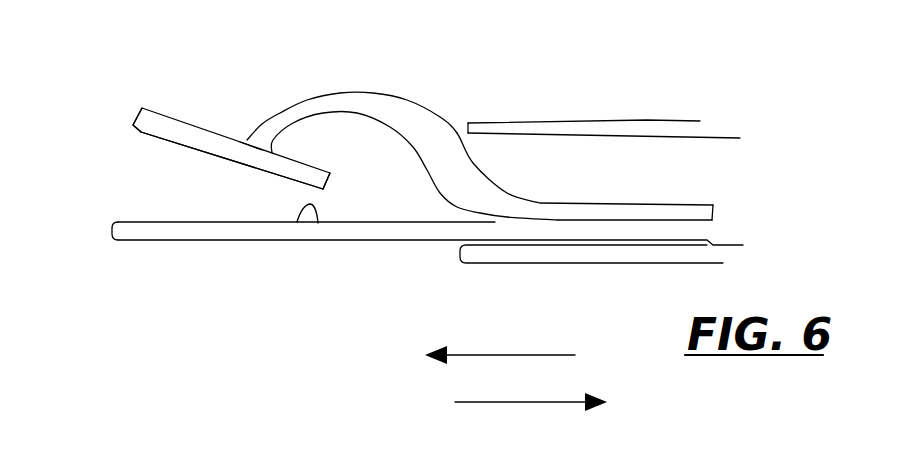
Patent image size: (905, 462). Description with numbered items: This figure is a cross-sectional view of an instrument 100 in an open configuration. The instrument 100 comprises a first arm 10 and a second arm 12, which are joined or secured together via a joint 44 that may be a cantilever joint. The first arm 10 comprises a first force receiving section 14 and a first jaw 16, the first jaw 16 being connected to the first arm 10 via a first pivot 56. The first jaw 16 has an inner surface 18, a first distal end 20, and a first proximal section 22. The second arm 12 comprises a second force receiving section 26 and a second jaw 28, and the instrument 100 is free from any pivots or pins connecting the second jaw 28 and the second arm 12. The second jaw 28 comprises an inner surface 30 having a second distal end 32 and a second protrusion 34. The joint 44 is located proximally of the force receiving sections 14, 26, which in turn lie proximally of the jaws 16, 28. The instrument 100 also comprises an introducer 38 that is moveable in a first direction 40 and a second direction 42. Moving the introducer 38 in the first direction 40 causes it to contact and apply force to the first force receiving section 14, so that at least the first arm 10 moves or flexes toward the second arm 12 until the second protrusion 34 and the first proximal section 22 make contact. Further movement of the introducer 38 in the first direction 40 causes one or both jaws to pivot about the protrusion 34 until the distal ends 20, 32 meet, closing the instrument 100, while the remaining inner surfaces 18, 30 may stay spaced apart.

The instrument 100 is at (478, 52).
The first arm 10 is at (334, 82).
The first force receiving section 14 is at (425, 106).
The joint 44 is at (560, 218).
The first jaw 16 is at (177, 122).
The inner surface 18 is at (217, 156).
The first distal end 20 is at (137, 128).
The first proximal section 22 is at (320, 188).
The first pivot 56 is at (255, 137).
The second arm 12 is at (274, 249).
The inner surface 30 is at (177, 221).
The second distal end 32 is at (120, 218).
The second jaw 28 is at (178, 241).
The second protrusion 34 is at (322, 217).
The second force receiving section 26 is at (413, 242).
The introducer 38 is at (657, 108).
The first direction 40 is at (519, 358).
The second direction 42 is at (516, 401).